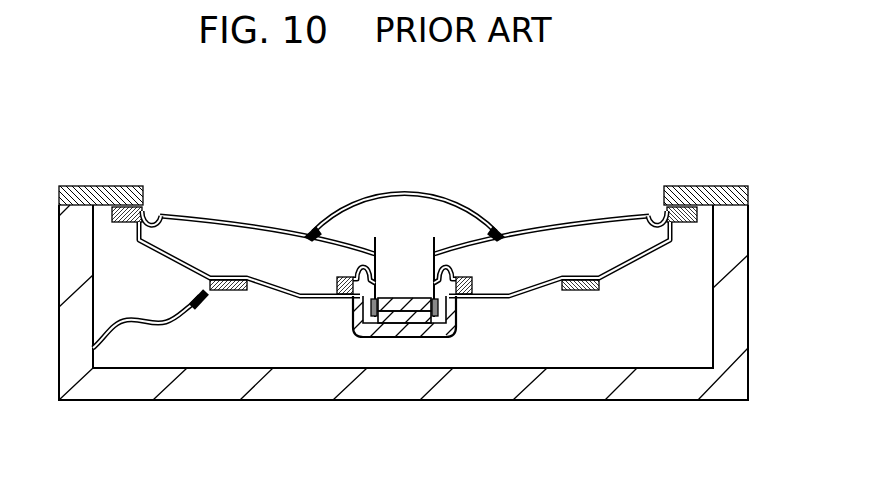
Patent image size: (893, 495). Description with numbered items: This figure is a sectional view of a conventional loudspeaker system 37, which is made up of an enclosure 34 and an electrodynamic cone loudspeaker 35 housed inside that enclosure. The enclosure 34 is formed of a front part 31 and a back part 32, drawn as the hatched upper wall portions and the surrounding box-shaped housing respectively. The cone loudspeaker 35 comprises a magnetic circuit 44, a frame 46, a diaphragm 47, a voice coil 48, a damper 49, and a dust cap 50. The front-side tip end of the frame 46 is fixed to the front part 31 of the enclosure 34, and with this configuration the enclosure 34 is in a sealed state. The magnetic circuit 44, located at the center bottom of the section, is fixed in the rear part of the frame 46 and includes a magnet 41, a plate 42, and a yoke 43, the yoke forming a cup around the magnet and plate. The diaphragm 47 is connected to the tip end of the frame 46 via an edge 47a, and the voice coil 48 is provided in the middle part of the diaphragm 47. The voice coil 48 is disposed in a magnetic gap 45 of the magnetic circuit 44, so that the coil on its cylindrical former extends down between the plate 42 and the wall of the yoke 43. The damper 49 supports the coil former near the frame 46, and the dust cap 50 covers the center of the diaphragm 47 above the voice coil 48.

The front part 31 is at (75, 187).
The back part 32 is at (688, 378).
The enclosure 34 is at (706, 186).
The electrodynamic cone loudspeaker 35 is at (418, 191).
The conventional loudspeaker system 37 is at (538, 168).
The magnet 41 is at (403, 303).
The plate 42 is at (416, 313).
The yoke 43 is at (404, 318).
The magnetic circuit 44 is at (383, 342).
The magnetic gap 45 is at (367, 312).
The frame 46 is at (283, 299).
The diaphragm 47 is at (202, 217).
The edge 47a is at (653, 214).
The voice coil 48 is at (373, 258).
The damper 49 is at (343, 284).
The dust cap 50 is at (455, 203).